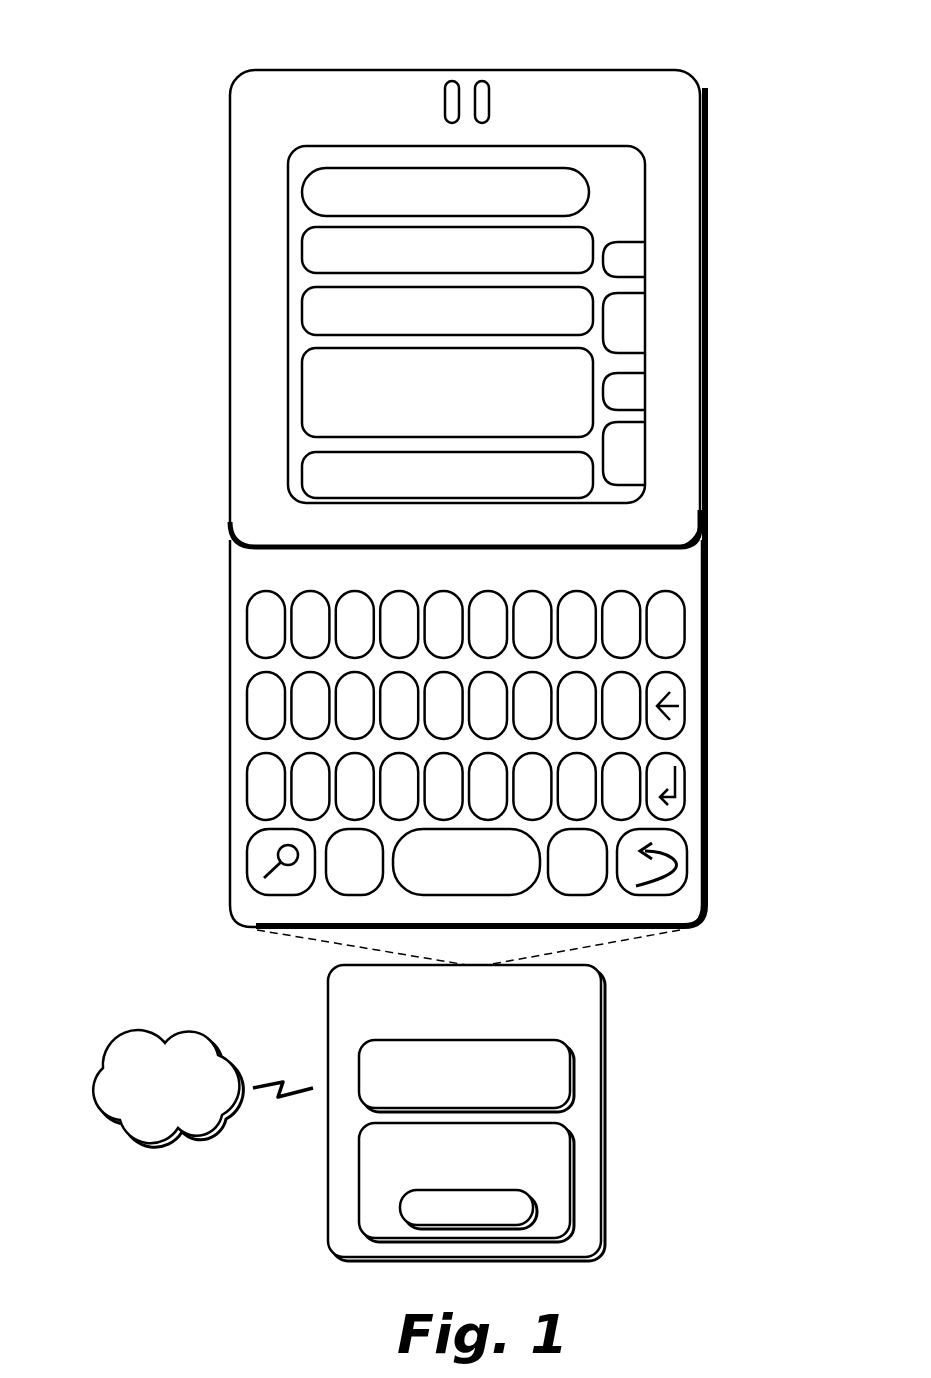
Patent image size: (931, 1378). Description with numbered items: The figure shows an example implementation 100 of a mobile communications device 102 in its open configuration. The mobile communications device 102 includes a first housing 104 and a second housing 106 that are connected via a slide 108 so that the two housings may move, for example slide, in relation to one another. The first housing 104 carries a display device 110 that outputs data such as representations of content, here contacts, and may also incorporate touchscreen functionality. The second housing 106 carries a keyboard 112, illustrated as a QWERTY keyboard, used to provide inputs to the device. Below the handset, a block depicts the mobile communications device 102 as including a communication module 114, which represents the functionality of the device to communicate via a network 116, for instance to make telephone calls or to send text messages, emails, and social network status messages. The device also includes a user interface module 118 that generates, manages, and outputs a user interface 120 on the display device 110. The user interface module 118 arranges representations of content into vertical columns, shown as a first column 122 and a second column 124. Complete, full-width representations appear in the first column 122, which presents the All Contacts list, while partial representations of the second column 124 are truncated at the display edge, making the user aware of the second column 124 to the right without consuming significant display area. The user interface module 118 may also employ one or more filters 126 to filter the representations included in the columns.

The example implementation 100 is at (152, 58).
The mobile communications device 102 is at (466, 1113).
The first housing 104 is at (245, 124).
The second housing 106 is at (237, 566).
The slide 108 is at (707, 505).
The display device 110 is at (287, 323).
The keyboard 112 is at (724, 574).
The communication module 114 is at (466, 1076).
The network 116 is at (203, 1088).
The user interface module 118 is at (466, 1182).
The user interface 120 is at (636, 182).
The first column 122 is at (412, 515).
The second column 124 is at (619, 515).
The filters 126 is at (468, 1209).